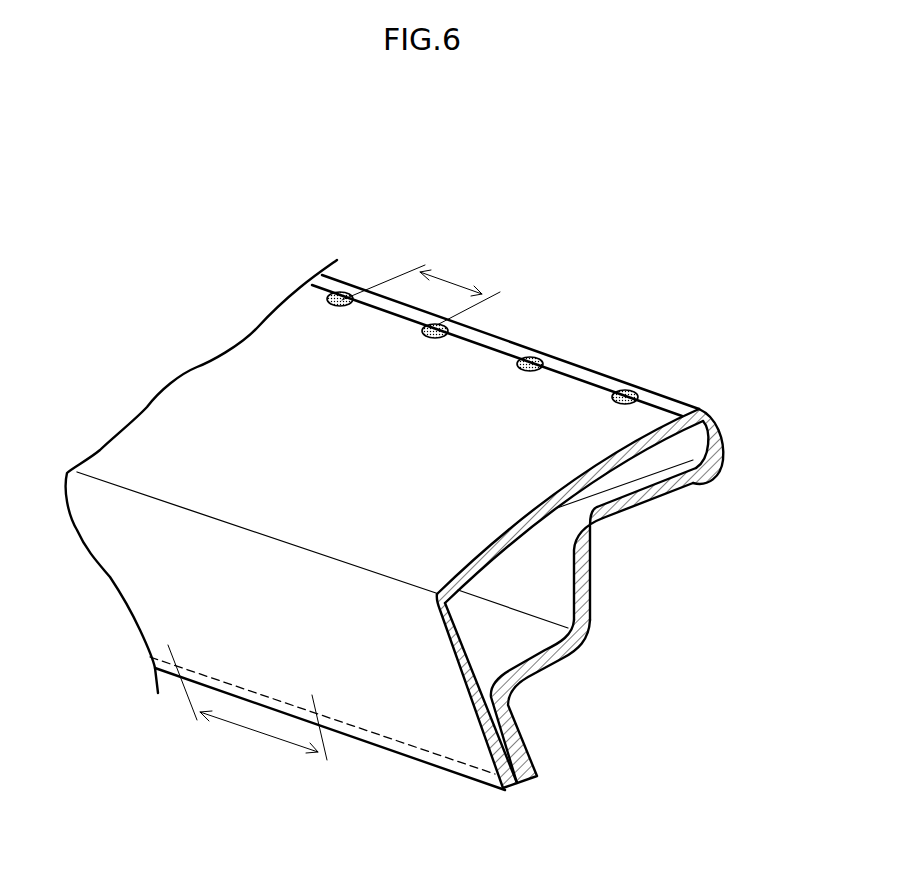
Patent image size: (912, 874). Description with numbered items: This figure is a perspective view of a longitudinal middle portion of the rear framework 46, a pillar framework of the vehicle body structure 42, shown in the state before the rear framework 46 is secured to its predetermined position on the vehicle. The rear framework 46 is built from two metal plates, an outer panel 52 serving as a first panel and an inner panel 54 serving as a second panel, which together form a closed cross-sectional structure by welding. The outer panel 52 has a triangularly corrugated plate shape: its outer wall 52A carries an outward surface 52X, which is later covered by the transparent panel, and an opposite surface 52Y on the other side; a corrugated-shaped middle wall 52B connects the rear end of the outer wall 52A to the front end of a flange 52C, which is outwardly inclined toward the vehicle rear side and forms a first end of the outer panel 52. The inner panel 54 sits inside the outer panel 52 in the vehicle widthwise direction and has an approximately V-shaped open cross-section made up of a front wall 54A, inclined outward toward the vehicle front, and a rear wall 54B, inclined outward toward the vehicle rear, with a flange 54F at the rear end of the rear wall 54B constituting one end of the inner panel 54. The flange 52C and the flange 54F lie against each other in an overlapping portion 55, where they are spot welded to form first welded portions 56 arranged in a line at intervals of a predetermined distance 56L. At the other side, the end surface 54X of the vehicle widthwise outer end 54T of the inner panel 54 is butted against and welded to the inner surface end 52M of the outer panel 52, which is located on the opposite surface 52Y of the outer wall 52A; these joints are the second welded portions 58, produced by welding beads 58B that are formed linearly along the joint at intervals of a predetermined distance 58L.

The vehicle body structure 42 is at (728, 255).
The rear framework 46 is at (766, 380).
The outer panel 52 is at (598, 628).
The outer wall 52A is at (726, 440).
The middle wall 52B is at (594, 566).
The flange 52C is at (528, 740).
The inner surface end 52M is at (660, 418).
The outward surface 52X is at (722, 422).
The opposite surface 52Y is at (687, 449).
The inner panel 54 is at (198, 388).
The front wall 54A is at (179, 436).
The rear wall 54B is at (147, 602).
The flange 54F is at (472, 752).
The vehicle widthwise outer end 54T is at (627, 415).
The end surface 54X is at (708, 408).
The overlapping portion 55 is at (377, 713).
The first welded portions 56 is at (174, 655).
The predetermined distance 56L is at (253, 727).
The second welded portions 58 is at (333, 311).
The welding beads 58B is at (325, 306).
The predetermined distance 58L is at (448, 283).